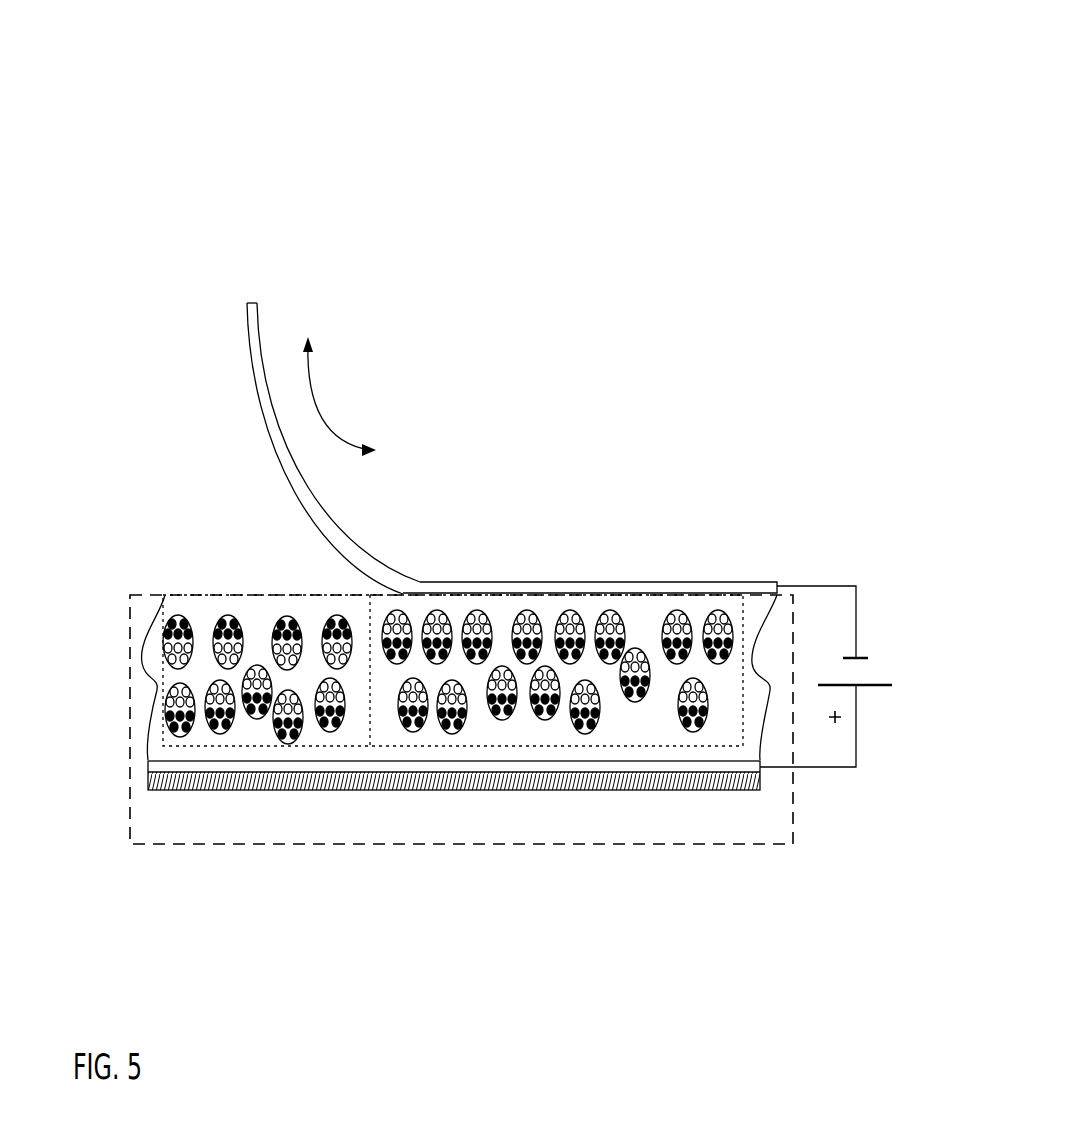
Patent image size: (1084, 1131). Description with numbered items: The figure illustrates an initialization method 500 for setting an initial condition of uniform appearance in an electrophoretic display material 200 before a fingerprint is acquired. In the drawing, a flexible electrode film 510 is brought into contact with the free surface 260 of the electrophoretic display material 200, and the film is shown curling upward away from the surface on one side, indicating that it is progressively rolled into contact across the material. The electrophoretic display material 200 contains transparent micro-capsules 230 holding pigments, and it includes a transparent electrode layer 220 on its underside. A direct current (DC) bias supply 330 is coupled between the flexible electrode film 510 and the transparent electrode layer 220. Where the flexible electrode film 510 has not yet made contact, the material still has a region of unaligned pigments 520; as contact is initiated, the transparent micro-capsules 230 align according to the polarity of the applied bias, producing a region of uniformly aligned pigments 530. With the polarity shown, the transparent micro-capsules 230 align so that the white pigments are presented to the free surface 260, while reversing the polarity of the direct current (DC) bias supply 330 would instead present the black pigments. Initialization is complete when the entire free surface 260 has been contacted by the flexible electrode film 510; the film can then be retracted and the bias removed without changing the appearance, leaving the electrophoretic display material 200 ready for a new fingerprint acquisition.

The initialization method 500 is at (116, 155).
The flexible electrode film 510 is at (255, 302).
The transparent micro-capsules 230 is at (212, 618).
The free surface 260 is at (158, 593).
The transparent electrode layer 220 is at (148, 768).
The region of unaligned pigments 520 is at (268, 753).
The region of uniformly aligned pigments 530 is at (633, 753).
The electrophoretic display material 200 is at (460, 843).
The direct current (DC) bias supply 330 is at (877, 692).